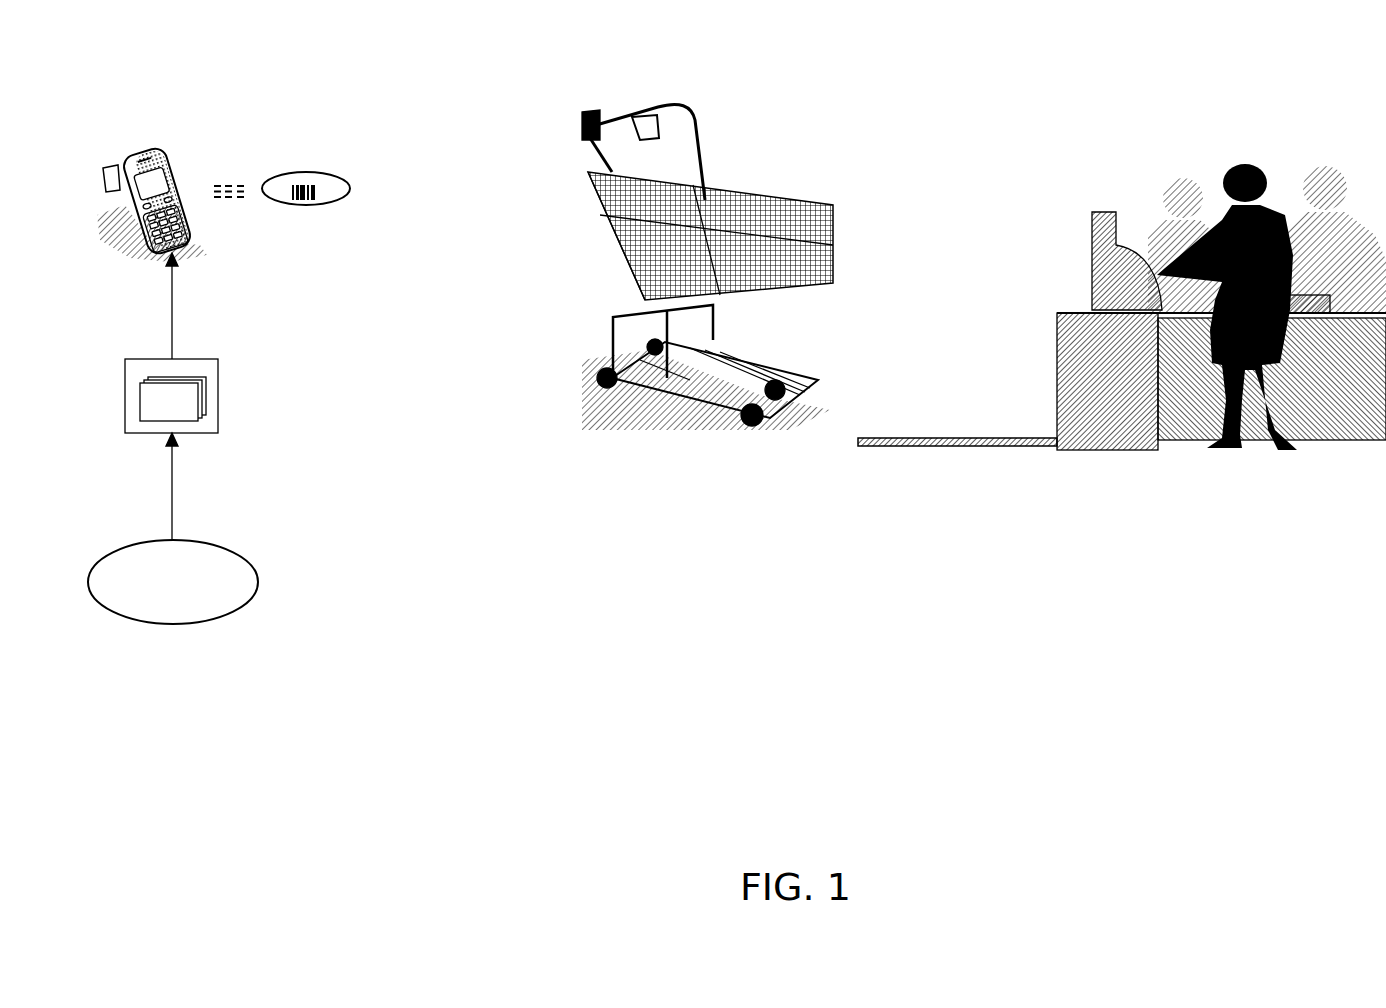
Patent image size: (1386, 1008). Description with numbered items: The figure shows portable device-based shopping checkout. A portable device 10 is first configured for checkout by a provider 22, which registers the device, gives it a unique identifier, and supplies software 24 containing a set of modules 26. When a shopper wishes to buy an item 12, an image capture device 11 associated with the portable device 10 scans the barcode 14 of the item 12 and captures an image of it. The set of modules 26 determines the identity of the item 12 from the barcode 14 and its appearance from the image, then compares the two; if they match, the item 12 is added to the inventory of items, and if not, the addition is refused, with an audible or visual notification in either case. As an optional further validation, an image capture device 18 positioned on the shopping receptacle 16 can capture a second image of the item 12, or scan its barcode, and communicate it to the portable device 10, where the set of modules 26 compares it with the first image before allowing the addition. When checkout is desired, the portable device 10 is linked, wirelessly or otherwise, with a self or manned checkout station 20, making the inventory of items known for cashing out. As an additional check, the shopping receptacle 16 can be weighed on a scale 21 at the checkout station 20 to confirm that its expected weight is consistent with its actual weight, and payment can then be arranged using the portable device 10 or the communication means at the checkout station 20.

The portable device 10 is at (141, 152).
The image capture device 11 is at (107, 168).
The item 12 is at (304, 185).
The barcode 14 is at (304, 200).
The shopping receptacle 16 is at (586, 127).
The image capture device 18 is at (647, 125).
The checkout station 20 is at (1205, 80).
The scale 21 is at (940, 438).
The provider 22 is at (258, 582).
The software 24 is at (218, 369).
The set of modules 26 is at (206, 402).